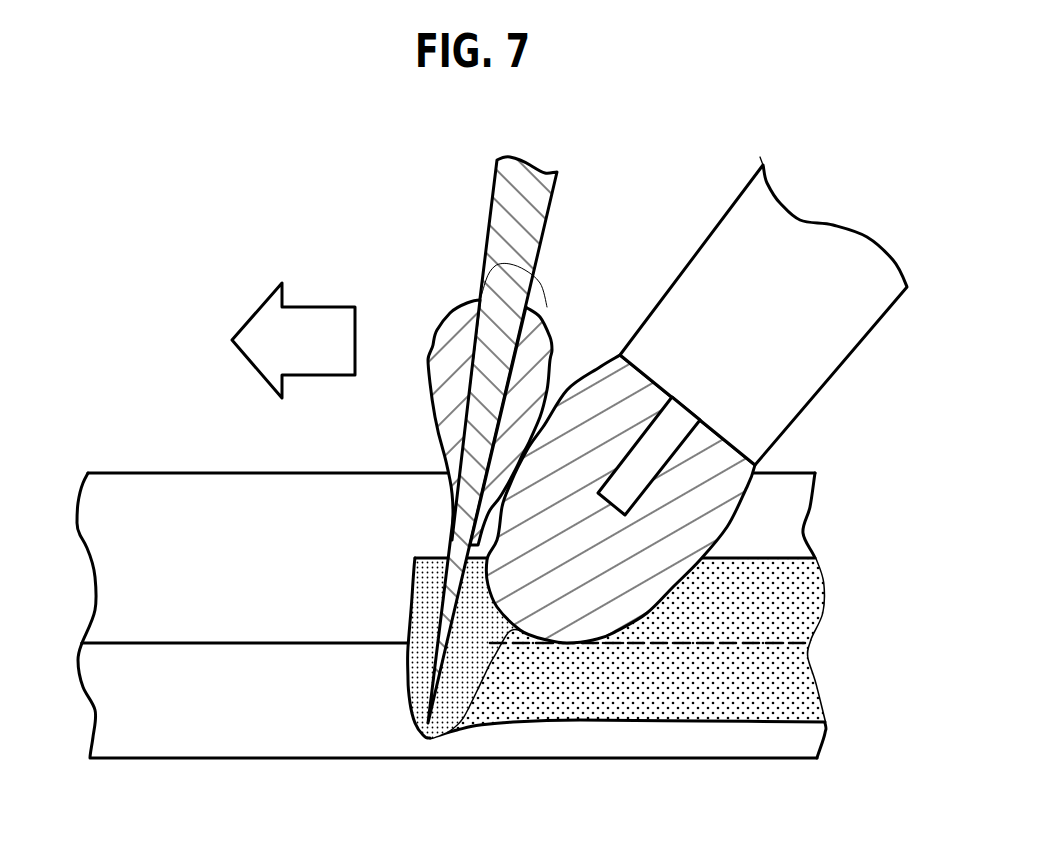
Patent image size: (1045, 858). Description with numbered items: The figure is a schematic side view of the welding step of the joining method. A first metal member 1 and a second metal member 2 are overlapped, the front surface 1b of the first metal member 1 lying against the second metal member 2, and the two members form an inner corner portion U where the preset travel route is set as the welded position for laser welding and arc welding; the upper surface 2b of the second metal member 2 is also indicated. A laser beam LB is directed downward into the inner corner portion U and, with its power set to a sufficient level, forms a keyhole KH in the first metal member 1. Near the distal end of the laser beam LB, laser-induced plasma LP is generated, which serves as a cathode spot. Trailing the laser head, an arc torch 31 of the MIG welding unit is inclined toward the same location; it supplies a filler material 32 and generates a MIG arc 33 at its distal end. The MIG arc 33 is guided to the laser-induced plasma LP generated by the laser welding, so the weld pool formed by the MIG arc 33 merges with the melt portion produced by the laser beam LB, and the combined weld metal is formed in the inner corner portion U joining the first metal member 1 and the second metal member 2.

The first metal member 1 is at (173, 743).
The front surface of the first metal member 1b is at (250, 643).
The second metal member 2 is at (148, 490).
The upper surface of second metal plate 2b is at (225, 473).
The inner corner portion U is at (155, 636).
The keyhole KH is at (415, 745).
The laser beam LB is at (500, 225).
The laser-induced plasma LP is at (485, 266).
The arc torch 31 is at (850, 315).
The filler material 32 is at (667, 433).
The MIG arc 33 is at (597, 393).